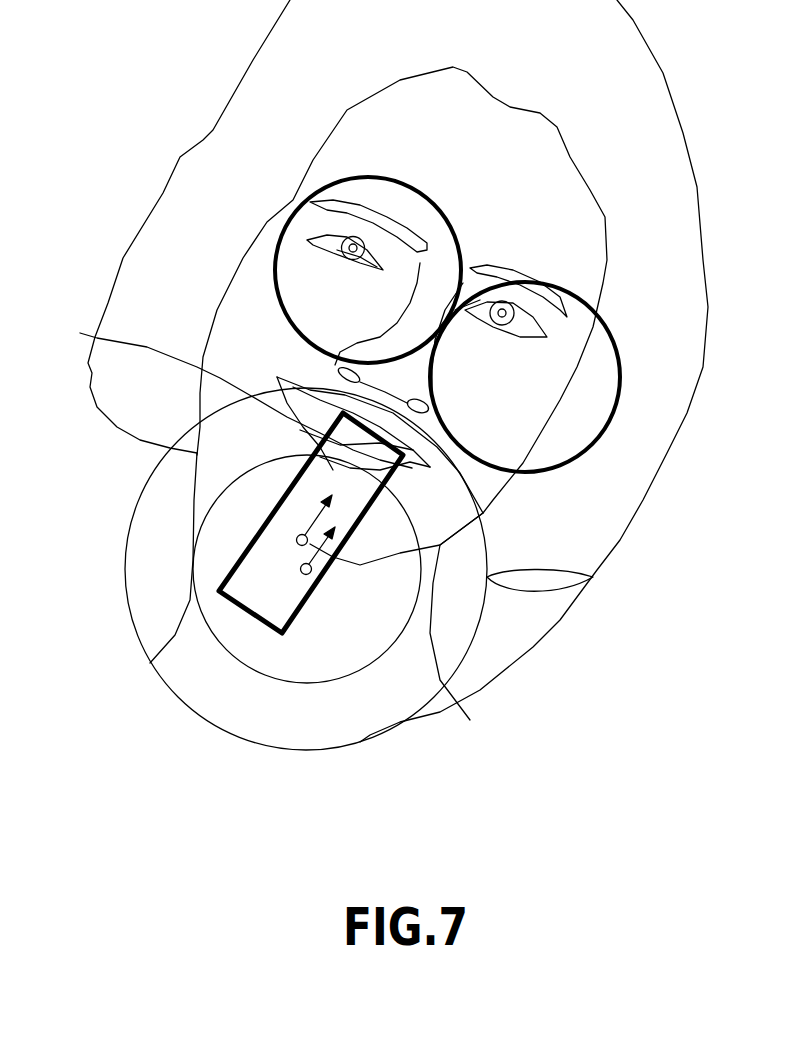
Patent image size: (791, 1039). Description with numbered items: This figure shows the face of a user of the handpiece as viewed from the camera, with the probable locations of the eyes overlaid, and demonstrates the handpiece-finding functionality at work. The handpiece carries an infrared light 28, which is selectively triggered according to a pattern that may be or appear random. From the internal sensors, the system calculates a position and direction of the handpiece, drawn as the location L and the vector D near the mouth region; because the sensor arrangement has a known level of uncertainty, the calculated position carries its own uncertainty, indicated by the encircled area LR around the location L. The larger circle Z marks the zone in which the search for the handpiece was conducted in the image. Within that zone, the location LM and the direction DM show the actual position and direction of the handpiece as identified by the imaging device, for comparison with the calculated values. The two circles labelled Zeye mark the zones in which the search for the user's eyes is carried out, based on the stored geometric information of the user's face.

The light 28 is at (358, 431).
The eye search zone Zeye is at (431, 334).
The handpiece search zone Z is at (362, 569).
The encircled uncertainty area LR is at (312, 615).
The actual handpiece location LM is at (226, 527).
The calculated handpiece location L is at (329, 603).
The actual handpiece direction DM is at (281, 473).
The calculated handpiece direction vector D is at (359, 568).